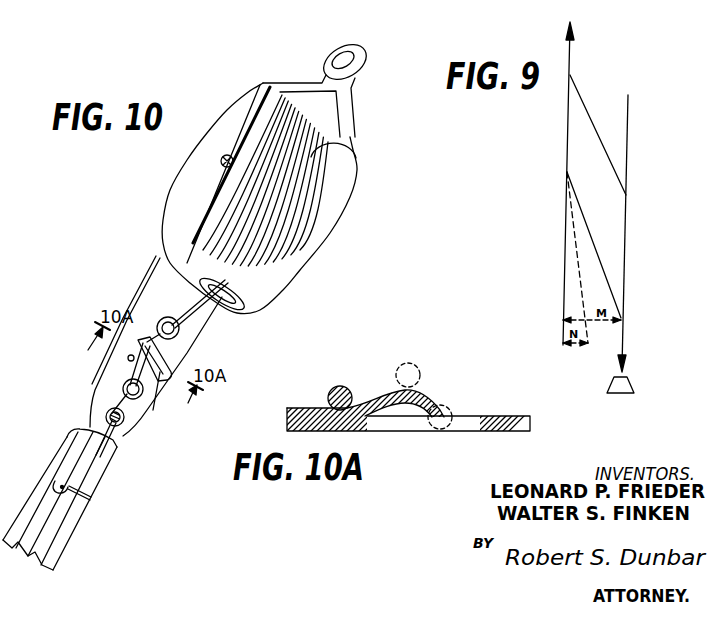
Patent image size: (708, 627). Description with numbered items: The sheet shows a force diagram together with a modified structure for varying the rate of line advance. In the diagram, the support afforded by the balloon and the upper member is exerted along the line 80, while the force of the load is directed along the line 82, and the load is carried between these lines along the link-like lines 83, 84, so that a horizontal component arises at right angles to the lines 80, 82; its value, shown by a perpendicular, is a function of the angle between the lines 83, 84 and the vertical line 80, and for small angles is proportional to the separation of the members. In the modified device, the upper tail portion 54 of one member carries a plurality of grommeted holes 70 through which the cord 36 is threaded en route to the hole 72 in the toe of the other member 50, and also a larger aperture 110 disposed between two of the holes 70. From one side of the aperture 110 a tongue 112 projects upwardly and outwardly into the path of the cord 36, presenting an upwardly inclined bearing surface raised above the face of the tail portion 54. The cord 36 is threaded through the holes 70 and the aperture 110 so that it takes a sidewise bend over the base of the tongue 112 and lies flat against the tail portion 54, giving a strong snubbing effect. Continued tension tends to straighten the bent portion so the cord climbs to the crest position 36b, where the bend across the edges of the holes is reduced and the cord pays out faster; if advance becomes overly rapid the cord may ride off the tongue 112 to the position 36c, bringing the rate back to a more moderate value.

In FIG. 10, the cord 36 is at (130, 373).
In FIG. 10A, the cord 36 is at (338, 386).
In FIG. 10A, the cord position on tongue crest 36b is at (413, 368).
In FIG. 10A, the cord position off tongue 36c is at (447, 430).
In FIG. 10, the member 50 is at (100, 483).
In FIG. 10, the tail portion 54 is at (203, 322).
In FIG. 10, the grommeted holes 70 is at (163, 321).
In FIG. 10, the hole 72 is at (100, 460).
In FIG. 9, the line of support force 80 is at (566, 124).
In FIG. 9, the line of load force 82 is at (627, 287).
In FIG. 9, the link-like force line 83 is at (588, 117).
In FIG. 9, the link-like force line 84 is at (588, 222).
In FIG. 10, the aperture 110 is at (175, 360).
In FIG. 10A, the aperture 110 is at (477, 420).
In FIG. 10, the tongue 112 is at (152, 362).
In FIG. 10A, the tongue 112 is at (373, 400).